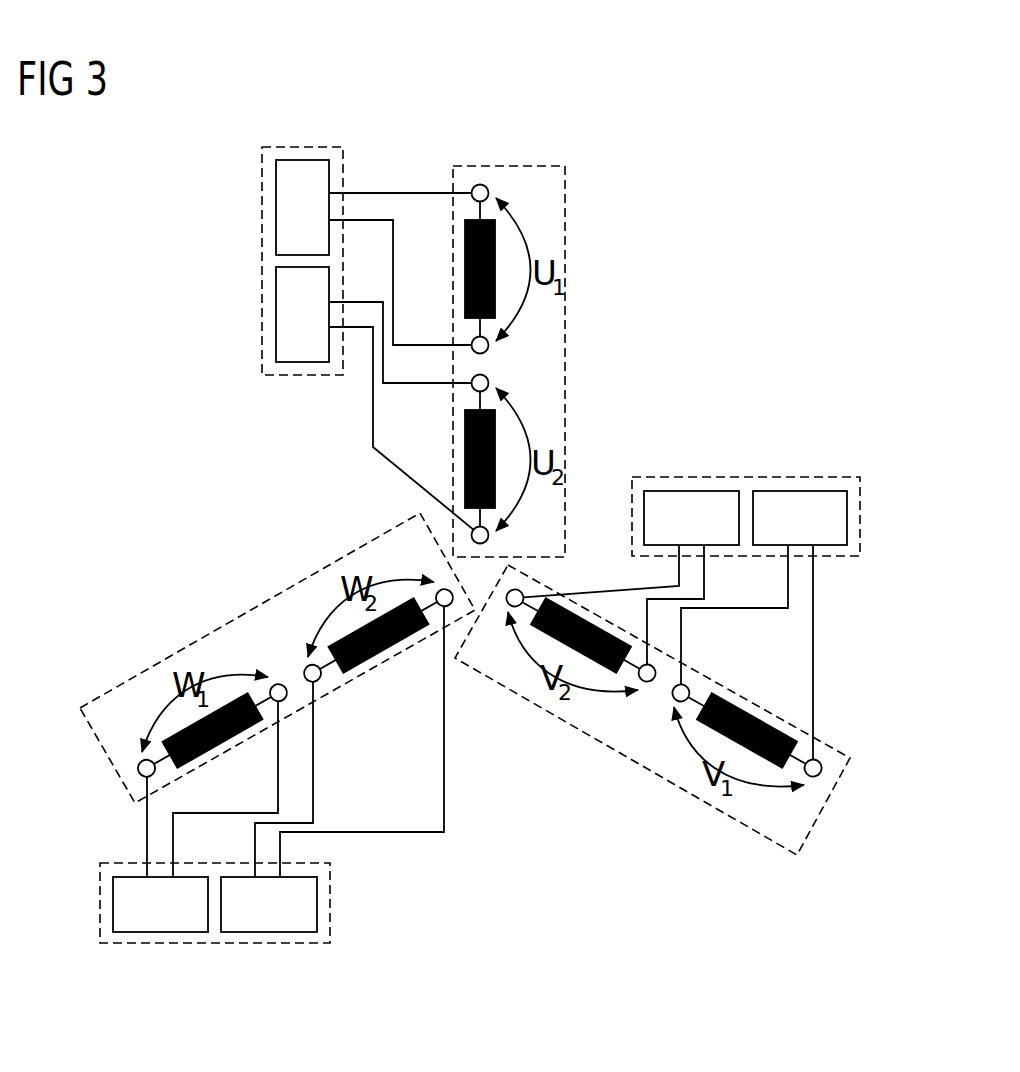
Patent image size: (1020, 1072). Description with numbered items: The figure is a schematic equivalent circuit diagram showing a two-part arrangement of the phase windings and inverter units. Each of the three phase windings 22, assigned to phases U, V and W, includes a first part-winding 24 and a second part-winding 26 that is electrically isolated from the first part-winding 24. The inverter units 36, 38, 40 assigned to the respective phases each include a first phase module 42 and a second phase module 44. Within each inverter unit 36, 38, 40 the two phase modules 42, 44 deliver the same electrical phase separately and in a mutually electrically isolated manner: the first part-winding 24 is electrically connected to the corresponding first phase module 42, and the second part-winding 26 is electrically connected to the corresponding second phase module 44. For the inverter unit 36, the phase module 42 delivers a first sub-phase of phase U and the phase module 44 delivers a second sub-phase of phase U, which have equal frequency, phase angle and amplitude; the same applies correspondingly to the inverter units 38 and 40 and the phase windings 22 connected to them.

The phase winding 22 is at (505, 166).
The first part-winding 24 is at (465, 259).
The second part-winding 26 is at (465, 438).
The inverter unit 36 is at (305, 147).
The inverter unit 38 is at (860, 515).
The inverter unit 40 is at (100, 905).
The first phase module 42 is at (276, 200).
The second phase module 44 is at (276, 314).